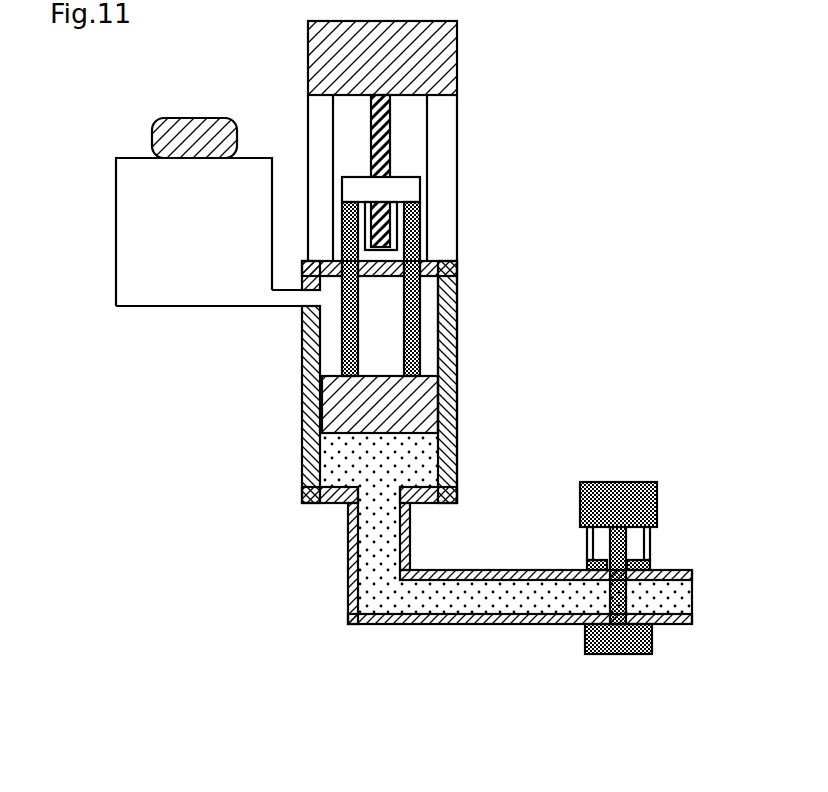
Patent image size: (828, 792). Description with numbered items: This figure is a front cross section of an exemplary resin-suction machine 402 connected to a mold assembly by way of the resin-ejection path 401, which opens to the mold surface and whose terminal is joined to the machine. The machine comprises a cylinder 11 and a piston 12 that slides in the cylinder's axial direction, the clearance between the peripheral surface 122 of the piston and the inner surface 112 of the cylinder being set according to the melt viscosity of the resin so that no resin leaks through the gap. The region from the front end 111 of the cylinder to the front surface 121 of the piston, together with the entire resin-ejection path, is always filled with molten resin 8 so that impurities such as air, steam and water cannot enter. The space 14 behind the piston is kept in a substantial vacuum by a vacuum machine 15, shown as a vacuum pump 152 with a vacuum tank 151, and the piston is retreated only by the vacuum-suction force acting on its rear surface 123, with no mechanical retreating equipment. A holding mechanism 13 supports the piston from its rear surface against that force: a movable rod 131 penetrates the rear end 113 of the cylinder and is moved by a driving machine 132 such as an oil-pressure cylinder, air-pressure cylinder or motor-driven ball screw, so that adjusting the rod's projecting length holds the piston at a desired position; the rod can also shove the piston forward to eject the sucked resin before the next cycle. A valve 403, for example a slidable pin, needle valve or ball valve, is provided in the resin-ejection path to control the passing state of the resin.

The resin 8 is at (342, 471).
The cylinder 11 is at (447, 458).
The front end of the cylinder 111 is at (412, 488).
The inner surface of the cylinder 112 is at (443, 320).
The rear end of the cylinder 113 is at (445, 261).
The piston 12 is at (418, 412).
The front surface of the piston 121 is at (362, 437).
The peripheral surface of the piston 122 is at (439, 399).
The rear surface of the piston 123 is at (424, 377).
The mechanism for holding the piston 13 is at (369, 247).
The movable rod 131 is at (349, 338).
The driving machine 132 is at (438, 63).
The space in the cylinder behind the piston 14 is at (328, 315).
The vacuum machine 15 is at (161, 178).
The vacuum tank 151 is at (195, 127).
The vacuum pump 152 is at (142, 173).
The resin-ejection path 401 is at (447, 598).
The resin-suction machine 402 is at (478, 277).
The valve 403 is at (620, 497).